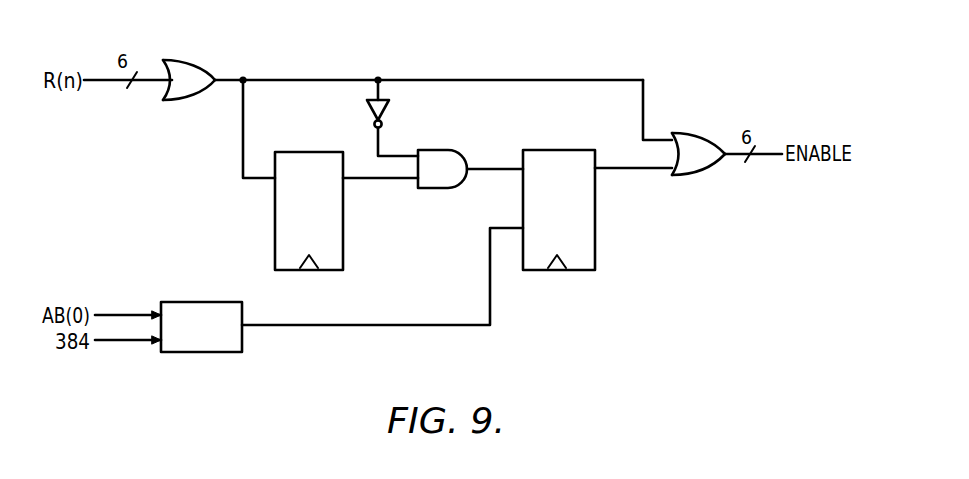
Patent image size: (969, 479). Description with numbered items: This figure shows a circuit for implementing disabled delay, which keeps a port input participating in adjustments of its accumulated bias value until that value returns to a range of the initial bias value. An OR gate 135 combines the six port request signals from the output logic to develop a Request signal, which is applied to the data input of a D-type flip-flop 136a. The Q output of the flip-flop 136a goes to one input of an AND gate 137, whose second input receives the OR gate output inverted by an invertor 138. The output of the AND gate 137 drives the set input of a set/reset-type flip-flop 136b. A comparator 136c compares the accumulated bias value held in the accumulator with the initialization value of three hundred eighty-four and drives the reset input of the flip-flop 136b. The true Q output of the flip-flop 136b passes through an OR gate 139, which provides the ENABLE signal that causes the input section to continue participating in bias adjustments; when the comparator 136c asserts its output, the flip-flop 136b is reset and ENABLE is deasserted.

The OR gate 135 is at (186, 60).
The D-type flip-flop 136a is at (305, 152).
The set/reset-type flip-flop 136b is at (553, 150).
The comparator 136c is at (213, 302).
The AND gate 137 is at (445, 150).
The invertor 138 is at (387, 111).
The OR gate 139 is at (687, 136).